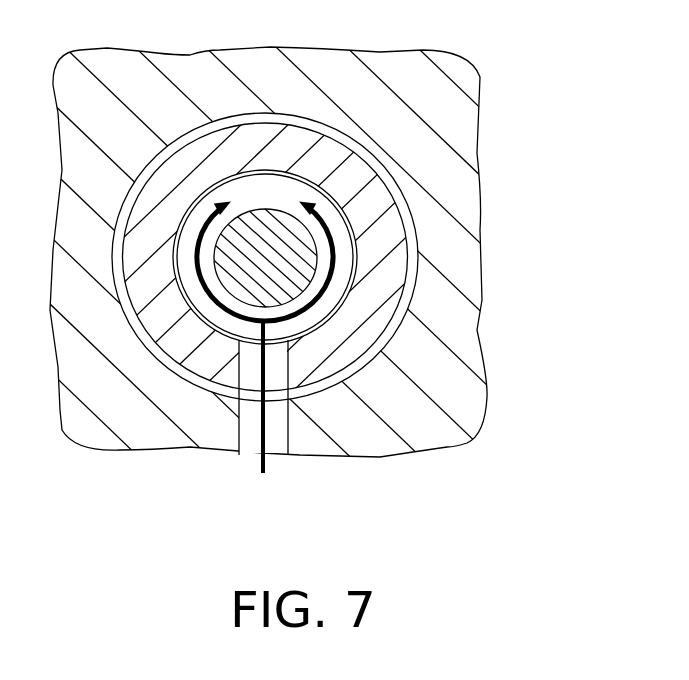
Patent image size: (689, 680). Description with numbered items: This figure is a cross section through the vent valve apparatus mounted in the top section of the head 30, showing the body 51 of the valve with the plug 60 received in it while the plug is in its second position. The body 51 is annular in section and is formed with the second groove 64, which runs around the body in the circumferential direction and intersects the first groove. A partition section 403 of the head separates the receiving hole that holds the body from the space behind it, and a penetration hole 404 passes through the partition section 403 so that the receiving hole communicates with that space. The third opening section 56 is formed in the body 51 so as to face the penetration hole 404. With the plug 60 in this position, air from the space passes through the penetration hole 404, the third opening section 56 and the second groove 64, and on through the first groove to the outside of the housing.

The head 30 is at (496, 72).
The body 51 is at (397, 226).
The plug 60 is at (285, 203).
The second groove 64 is at (227, 323).
The third opening section 56 is at (252, 378).
The penetration hole 404 is at (275, 445).
The partition section 403 is at (305, 438).